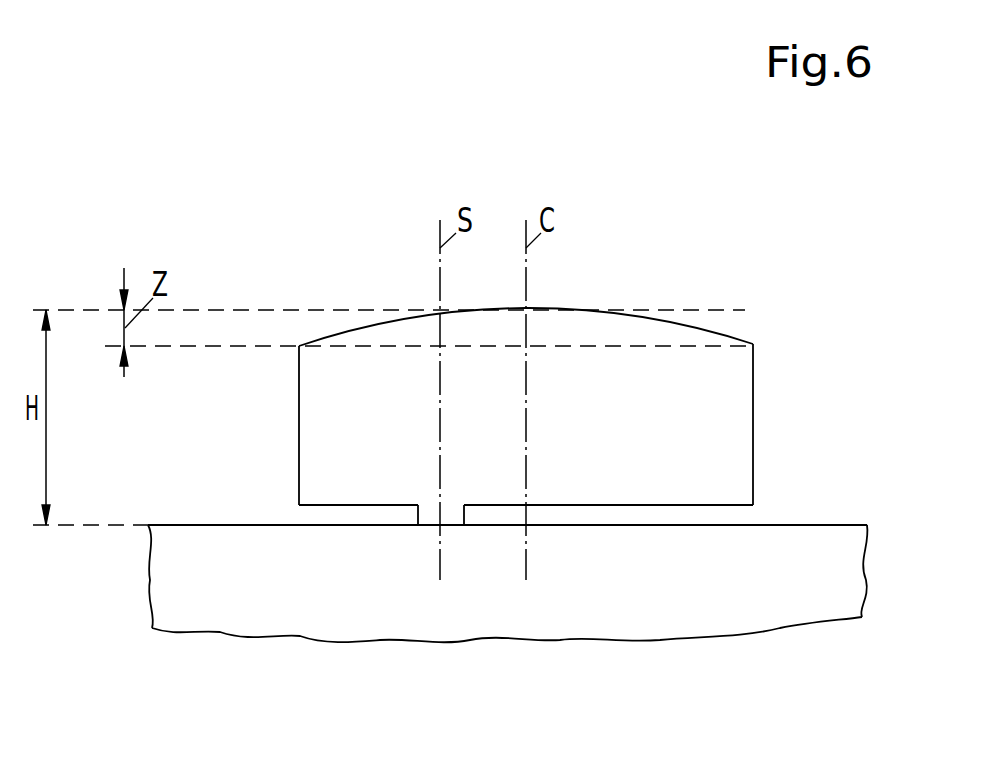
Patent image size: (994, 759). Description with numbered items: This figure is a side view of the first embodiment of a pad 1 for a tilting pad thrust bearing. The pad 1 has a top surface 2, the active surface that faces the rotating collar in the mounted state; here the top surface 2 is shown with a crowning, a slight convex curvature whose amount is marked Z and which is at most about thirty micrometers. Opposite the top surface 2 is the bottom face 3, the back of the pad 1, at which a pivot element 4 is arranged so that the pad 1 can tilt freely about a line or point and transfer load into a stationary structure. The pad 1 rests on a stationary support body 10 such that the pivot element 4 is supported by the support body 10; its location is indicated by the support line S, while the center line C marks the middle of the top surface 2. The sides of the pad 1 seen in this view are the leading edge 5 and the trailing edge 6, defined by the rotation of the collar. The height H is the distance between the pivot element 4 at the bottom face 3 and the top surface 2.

The pad 1 is at (523, 411).
The top surface 2 is at (661, 313).
The bottom face 3 is at (658, 505).
The pivot element 4 is at (436, 513).
The leading edge 5 is at (756, 412).
The trailing edge 6 is at (299, 422).
The support body 10 is at (847, 560).